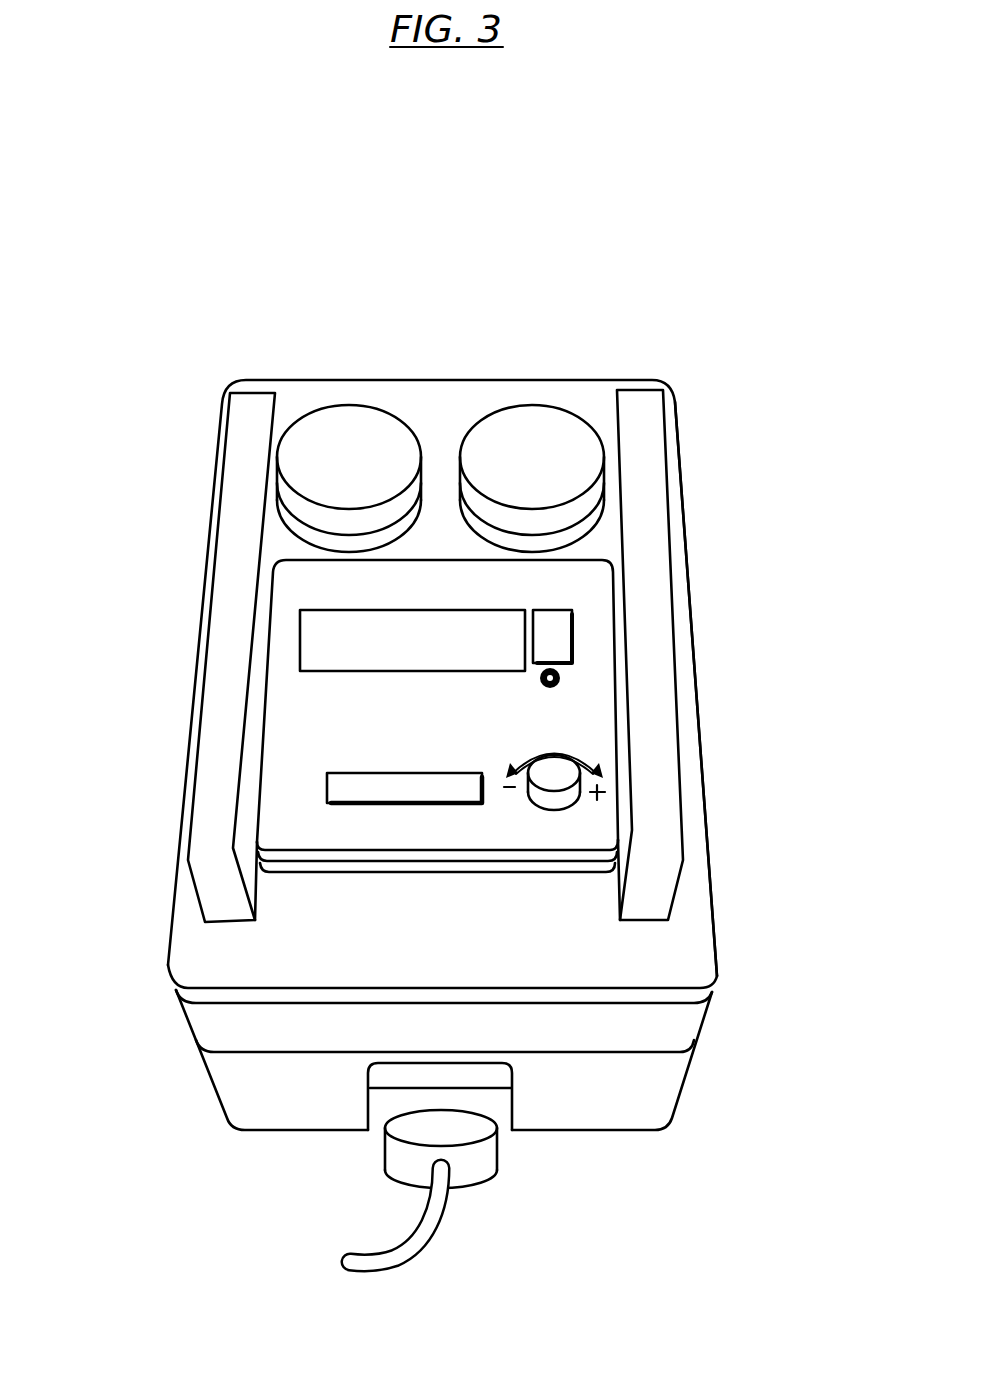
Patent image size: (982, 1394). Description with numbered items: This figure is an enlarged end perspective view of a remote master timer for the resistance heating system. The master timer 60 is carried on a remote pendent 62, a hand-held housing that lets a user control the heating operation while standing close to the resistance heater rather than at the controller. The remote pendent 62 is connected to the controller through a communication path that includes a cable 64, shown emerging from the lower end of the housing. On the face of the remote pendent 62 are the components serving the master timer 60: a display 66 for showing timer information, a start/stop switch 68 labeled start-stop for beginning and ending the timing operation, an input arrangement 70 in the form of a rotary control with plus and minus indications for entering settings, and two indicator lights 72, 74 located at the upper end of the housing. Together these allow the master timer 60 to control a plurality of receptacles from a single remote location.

The master timer 60 is at (692, 599).
The remote pendent 62 is at (683, 660).
The cable 64 is at (383, 1270).
The display 66 is at (313, 647).
The start/stop switch 68 is at (350, 788).
The input arrangement 70 is at (555, 777).
The indicator light 72 is at (535, 420).
The indicator light 74 is at (355, 422).